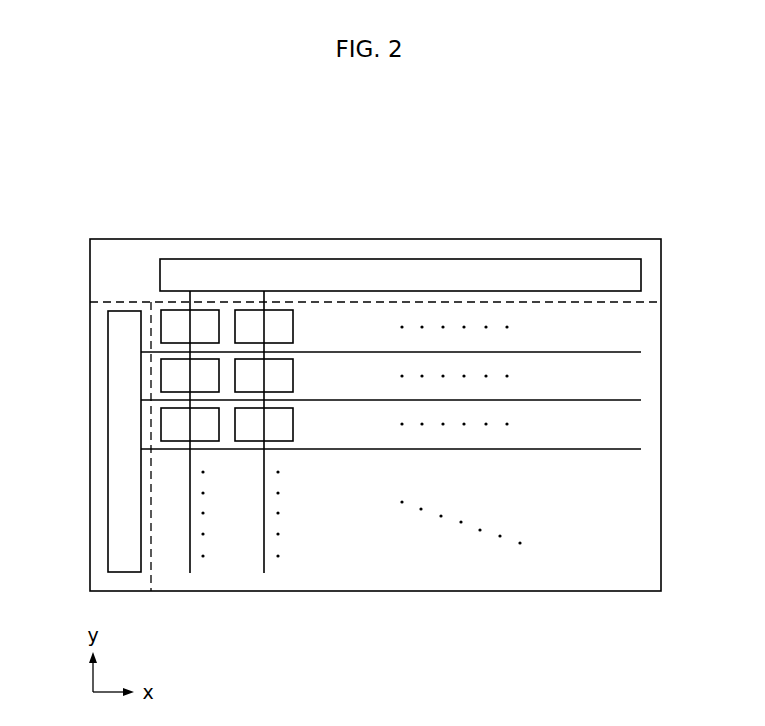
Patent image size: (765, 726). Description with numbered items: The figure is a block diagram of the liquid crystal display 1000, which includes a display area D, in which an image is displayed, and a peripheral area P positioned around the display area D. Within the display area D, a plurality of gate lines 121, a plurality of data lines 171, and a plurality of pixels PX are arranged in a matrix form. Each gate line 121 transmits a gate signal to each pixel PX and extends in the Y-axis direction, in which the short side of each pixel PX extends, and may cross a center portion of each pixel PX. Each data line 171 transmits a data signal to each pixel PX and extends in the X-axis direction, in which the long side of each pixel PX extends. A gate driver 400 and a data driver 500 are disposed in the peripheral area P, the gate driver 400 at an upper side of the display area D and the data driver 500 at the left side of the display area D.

The liquid crystal display 1000 is at (395, 178).
The peripheral area P is at (130, 246).
The gate driver 400 is at (464, 259).
The display area D is at (624, 302).
The data driver 500 is at (108, 434).
The gate line 121 is at (190, 295).
The data line 171 is at (155, 352).
The pixel PX is at (160, 310).